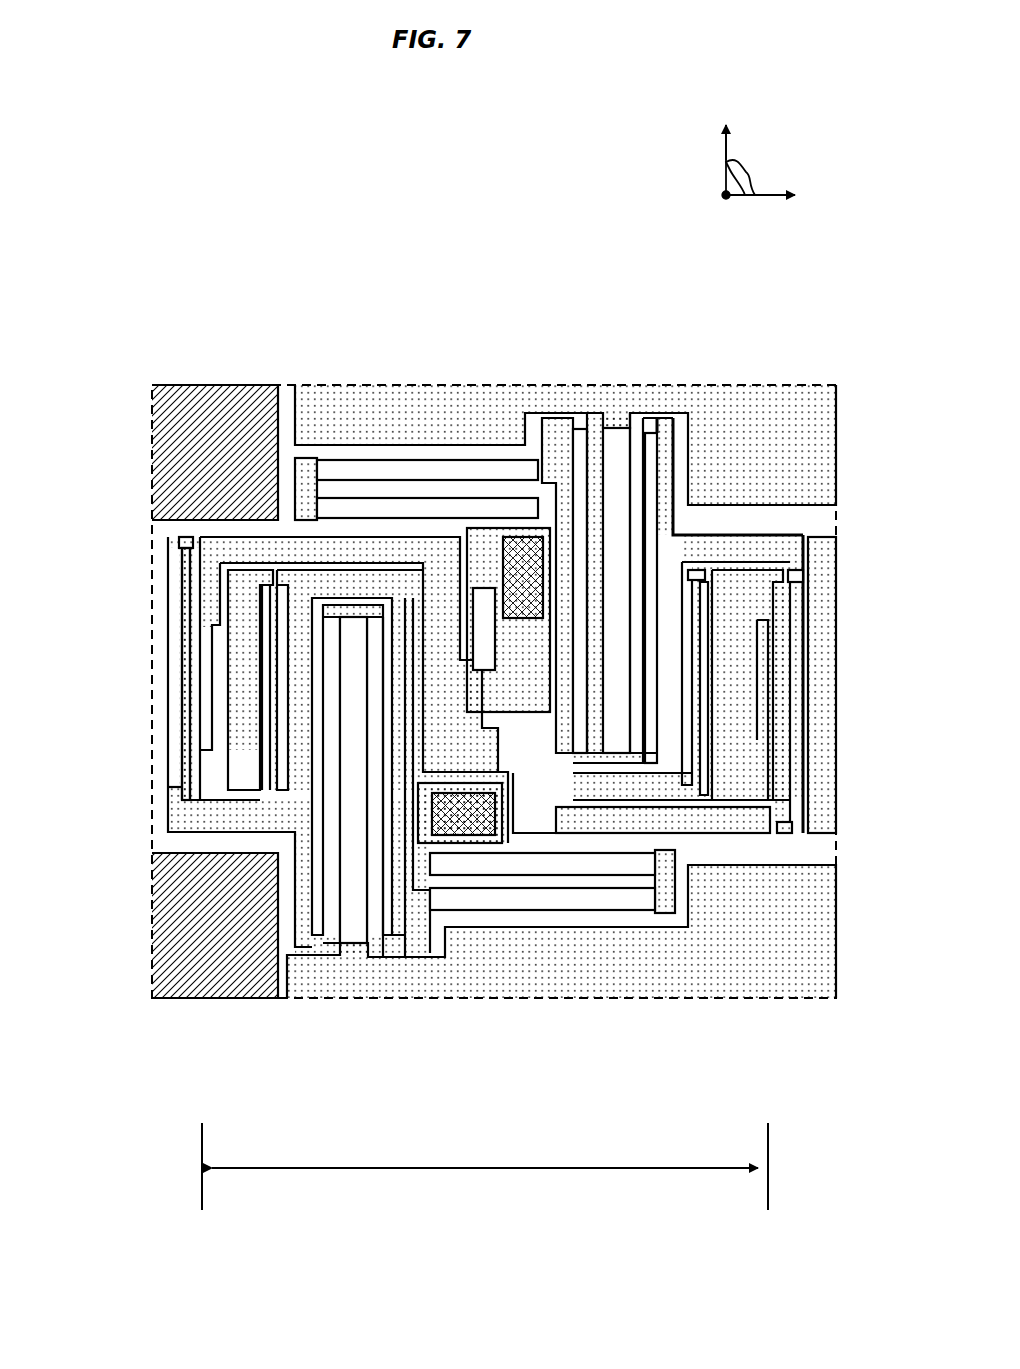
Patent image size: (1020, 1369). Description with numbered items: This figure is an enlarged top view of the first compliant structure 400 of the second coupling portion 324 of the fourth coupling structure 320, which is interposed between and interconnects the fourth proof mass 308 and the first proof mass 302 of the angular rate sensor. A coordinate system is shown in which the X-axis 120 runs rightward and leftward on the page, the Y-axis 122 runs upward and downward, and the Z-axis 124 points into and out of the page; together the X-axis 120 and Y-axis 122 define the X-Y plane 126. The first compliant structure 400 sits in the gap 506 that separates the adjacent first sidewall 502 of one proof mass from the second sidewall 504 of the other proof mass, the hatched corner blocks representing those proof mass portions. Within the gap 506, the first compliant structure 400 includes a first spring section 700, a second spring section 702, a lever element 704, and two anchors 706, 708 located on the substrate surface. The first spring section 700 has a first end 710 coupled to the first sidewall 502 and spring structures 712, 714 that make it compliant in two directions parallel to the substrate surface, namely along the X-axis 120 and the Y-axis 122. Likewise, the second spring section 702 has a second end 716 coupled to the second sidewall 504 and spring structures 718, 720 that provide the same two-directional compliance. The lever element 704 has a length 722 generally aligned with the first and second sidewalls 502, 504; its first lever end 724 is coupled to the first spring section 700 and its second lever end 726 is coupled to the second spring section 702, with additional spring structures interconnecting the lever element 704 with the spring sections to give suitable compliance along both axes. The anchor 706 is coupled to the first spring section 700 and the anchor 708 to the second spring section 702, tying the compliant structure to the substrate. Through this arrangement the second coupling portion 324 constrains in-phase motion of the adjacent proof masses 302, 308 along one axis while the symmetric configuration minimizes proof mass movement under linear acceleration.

The fourth coupling structure 320 is at (290, 222).
The first proof mass 302 is at (565, 445).
The fourth proof mass 308 is at (561, 931).
The second coupling portion 324 is at (841, 1234).
The first compliant structure 400 is at (244, 842).
The first sidewall 502 is at (813, 520).
The second sidewall 504 is at (820, 848).
The gap 506 is at (262, 529).
The first spring section 700 is at (597, 428).
The second spring section 702 is at (494, 928).
The lever element 704 is at (690, 822).
The anchor 706 is at (505, 547).
The anchor 708 is at (480, 826).
The first end 710 is at (620, 423).
The spring structure 712 is at (362, 458).
The spring structure 714 is at (645, 613).
The second end 716 is at (355, 950).
The spring structure 718 is at (600, 890).
The spring structure 720 is at (345, 768).
The length 722 is at (357, 1170).
The first lever end 724 is at (765, 750).
The second lever end 726 is at (212, 622).
The X-axis 120 is at (828, 196).
The Y-axis 122 is at (712, 97).
The Z-axis 124 is at (738, 213).
The X-Y plane 126 is at (750, 170).